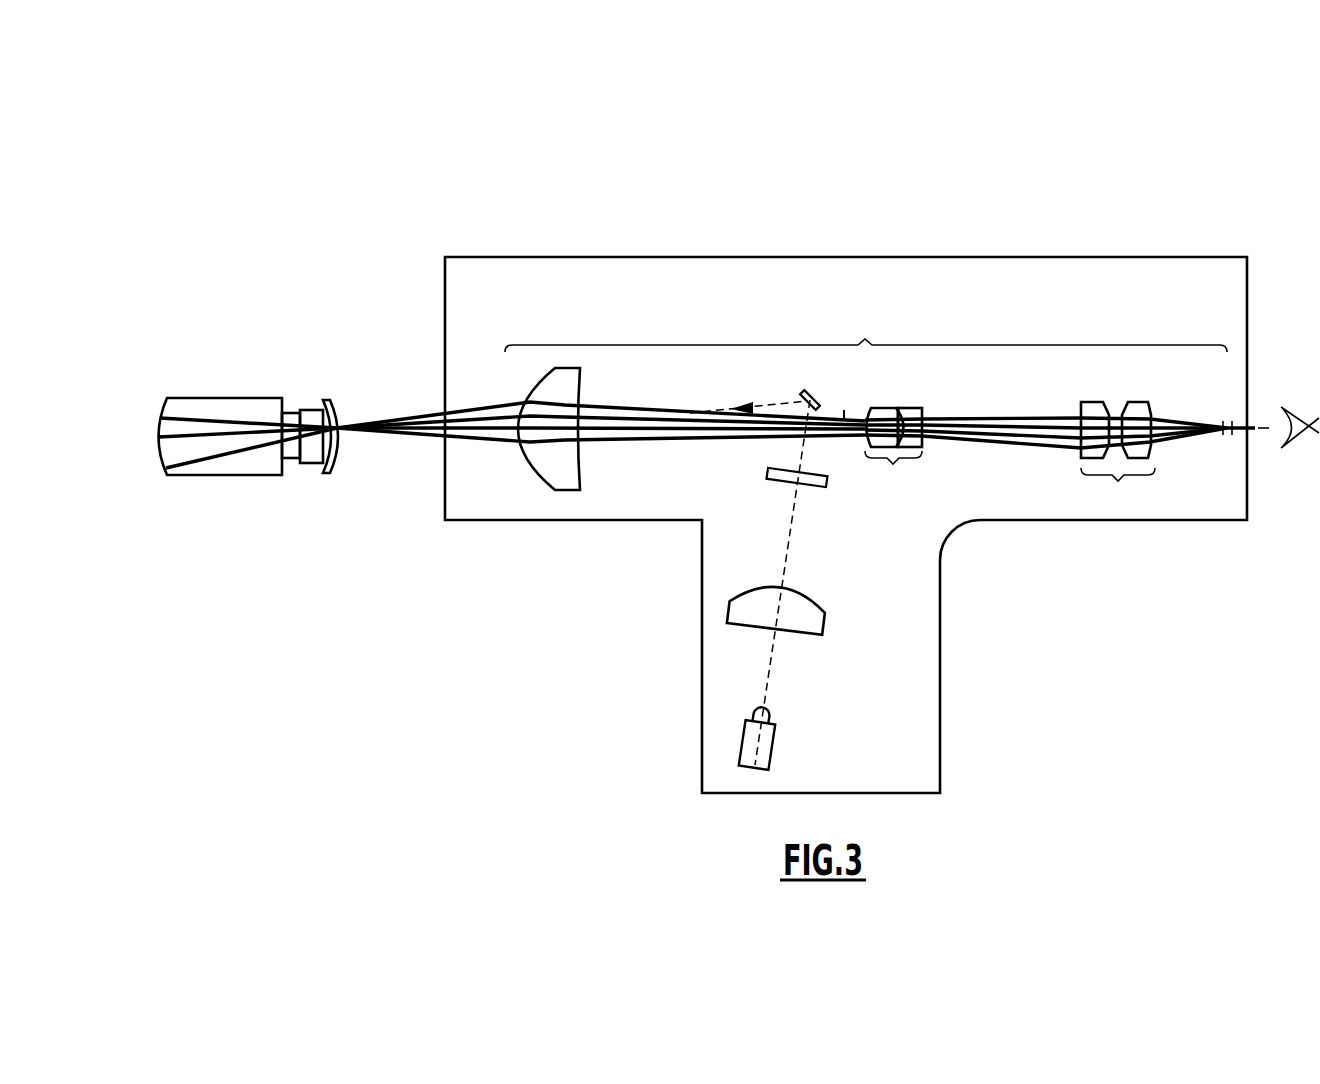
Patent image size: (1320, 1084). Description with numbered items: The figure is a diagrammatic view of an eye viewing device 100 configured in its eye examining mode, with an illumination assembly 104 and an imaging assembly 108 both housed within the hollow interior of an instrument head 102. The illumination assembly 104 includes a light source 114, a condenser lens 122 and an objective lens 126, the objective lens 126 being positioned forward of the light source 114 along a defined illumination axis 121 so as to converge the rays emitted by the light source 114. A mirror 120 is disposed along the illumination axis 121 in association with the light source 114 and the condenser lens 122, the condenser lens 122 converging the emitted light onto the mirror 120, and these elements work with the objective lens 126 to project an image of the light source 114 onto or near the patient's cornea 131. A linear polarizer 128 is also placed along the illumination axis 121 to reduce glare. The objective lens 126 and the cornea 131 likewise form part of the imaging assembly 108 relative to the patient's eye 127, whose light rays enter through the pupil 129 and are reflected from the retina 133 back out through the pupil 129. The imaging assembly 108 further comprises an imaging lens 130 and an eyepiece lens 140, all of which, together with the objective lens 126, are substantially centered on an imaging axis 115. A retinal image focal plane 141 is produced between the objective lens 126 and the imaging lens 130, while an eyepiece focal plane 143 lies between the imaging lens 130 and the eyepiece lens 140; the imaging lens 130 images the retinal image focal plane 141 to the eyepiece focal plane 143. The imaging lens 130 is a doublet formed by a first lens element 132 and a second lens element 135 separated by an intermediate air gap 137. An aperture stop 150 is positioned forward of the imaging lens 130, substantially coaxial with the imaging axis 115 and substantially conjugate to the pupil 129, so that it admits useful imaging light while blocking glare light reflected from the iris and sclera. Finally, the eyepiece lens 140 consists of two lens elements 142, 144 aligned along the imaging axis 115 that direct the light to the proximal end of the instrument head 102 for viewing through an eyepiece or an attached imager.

The eye viewing device 100 is at (457, 150).
The instrument head 102 is at (632, 257).
The illumination assembly 104 is at (790, 670).
The imaging assembly 108 is at (866, 330).
The light source 114 is at (777, 742).
The imaging axis 115 is at (1047, 430).
The mirror 120 is at (812, 393).
The illumination axis 121 is at (788, 549).
The condenser lens 122 is at (728, 613).
The objective lens 126 is at (571, 384).
The eye 127 is at (237, 493).
The linear polarizer 128 is at (827, 485).
The pupil 129 is at (337, 411).
The imaging lens 130 is at (901, 422).
The cornea 131 is at (337, 448).
The first lens element 132 is at (878, 408).
The retina 133 is at (158, 434).
The second lens element 135 is at (916, 408).
The intermediate air gap 137 is at (900, 423).
The eyepiece lens 140 is at (1116, 431).
The retinal image focal plane 141 is at (786, 411).
The eyepiece lens element 142 is at (1098, 402).
The eyepiece focal plane 143 is at (1053, 432).
The eyepiece lens element 144 is at (1135, 402).
The aperture stop 150 is at (844, 434).